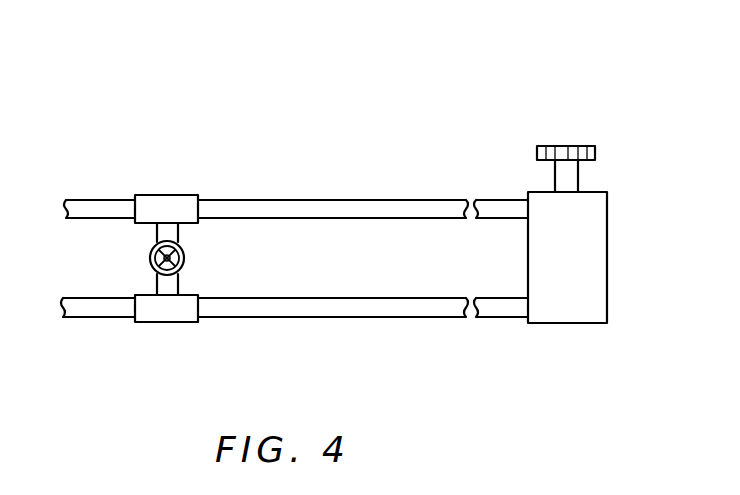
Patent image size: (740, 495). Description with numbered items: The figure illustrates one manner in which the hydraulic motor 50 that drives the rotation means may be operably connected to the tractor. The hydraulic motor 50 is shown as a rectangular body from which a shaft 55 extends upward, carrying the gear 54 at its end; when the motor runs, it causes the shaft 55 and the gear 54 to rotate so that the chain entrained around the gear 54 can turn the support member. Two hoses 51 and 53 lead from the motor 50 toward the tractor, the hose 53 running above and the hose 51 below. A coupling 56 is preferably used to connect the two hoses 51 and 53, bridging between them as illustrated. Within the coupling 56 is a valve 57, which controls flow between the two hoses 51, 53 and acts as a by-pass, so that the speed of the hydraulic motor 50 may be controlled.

The hydraulic motor 50 is at (598, 262).
The hose 51 is at (503, 310).
The hose 53 is at (498, 203).
The gear 54 is at (593, 148).
The shaft 55 is at (573, 175).
The coupling 56 is at (182, 200).
The valve 57 is at (185, 258).